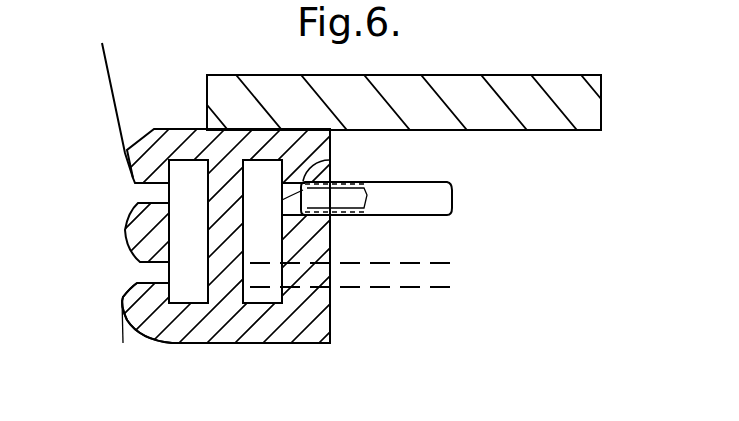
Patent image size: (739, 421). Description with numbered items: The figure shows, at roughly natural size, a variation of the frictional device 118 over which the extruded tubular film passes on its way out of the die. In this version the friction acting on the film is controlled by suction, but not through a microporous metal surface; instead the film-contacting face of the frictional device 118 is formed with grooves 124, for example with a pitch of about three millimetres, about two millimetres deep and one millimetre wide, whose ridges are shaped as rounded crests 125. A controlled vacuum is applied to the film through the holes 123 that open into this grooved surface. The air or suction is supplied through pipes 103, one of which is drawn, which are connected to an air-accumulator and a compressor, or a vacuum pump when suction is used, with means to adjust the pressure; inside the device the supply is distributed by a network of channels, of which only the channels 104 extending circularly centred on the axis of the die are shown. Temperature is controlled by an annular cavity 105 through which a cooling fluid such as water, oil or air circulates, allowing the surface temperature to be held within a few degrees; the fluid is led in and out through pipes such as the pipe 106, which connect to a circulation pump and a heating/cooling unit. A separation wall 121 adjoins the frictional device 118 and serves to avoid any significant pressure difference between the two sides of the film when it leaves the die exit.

The pipe 103 is at (432, 277).
The channels 104 is at (184, 230).
The annular cavity 105 is at (330, 162).
The pipe 106 is at (432, 200).
The frictional device 118 is at (196, 136).
The separation wall 121 is at (545, 108).
The holes 123 is at (150, 193).
The grooves 124 is at (135, 306).
The rounded crests 125 is at (128, 322).